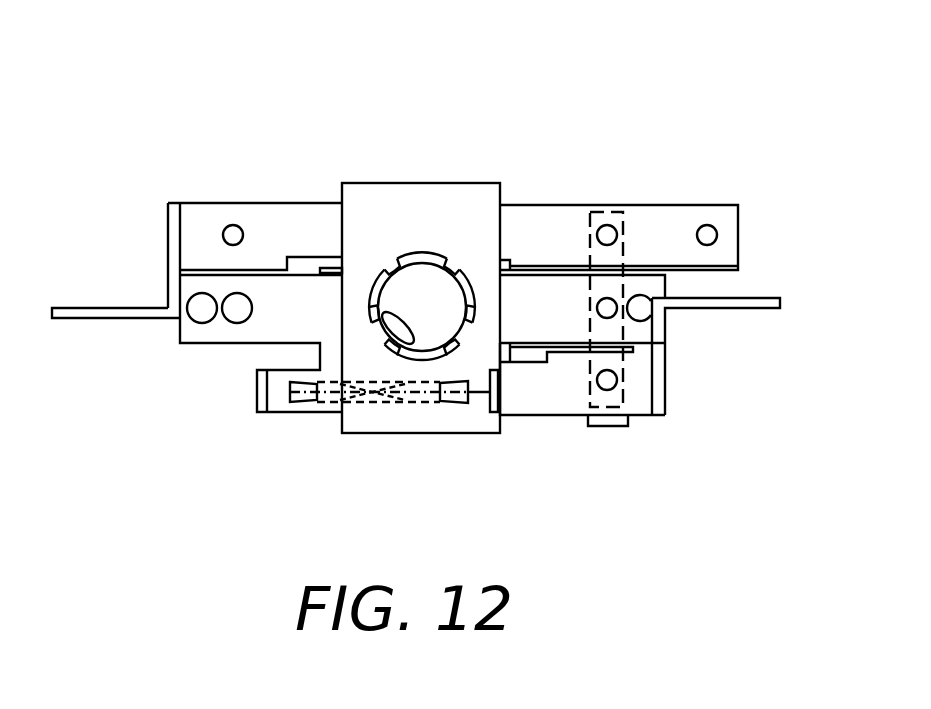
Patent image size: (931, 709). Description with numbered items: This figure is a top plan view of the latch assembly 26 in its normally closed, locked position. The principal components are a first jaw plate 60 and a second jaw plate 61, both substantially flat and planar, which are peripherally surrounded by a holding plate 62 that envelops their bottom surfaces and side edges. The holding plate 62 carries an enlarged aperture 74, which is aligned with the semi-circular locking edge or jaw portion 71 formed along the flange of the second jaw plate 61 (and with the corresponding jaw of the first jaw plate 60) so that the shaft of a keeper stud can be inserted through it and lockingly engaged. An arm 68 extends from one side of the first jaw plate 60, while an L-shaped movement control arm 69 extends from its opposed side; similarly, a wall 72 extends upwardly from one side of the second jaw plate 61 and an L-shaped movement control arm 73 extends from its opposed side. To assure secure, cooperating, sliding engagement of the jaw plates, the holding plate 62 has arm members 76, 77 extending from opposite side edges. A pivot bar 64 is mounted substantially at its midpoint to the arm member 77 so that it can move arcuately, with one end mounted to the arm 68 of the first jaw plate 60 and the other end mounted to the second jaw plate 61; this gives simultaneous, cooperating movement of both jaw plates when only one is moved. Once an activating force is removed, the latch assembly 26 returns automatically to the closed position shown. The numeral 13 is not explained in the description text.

The latch assembly 26 is at (152, 167).
The first jaw plate 60 is at (293, 228).
The second jaw plate 61 is at (560, 408).
The holding plate 62 is at (438, 212).
The pivot bar 64 is at (603, 207).
The arm 68 is at (693, 217).
The L-shaped movement control arm 69 is at (52, 318).
The locking edge or jaw portion 71 is at (385, 315).
The wall 72 is at (260, 395).
The L-shaped movement control arm 73 is at (728, 312).
The enlarged aperture 74 is at (413, 343).
The arm member 76 is at (180, 342).
The arm member 77 is at (665, 287).
The frame 13 is at (662, 513).